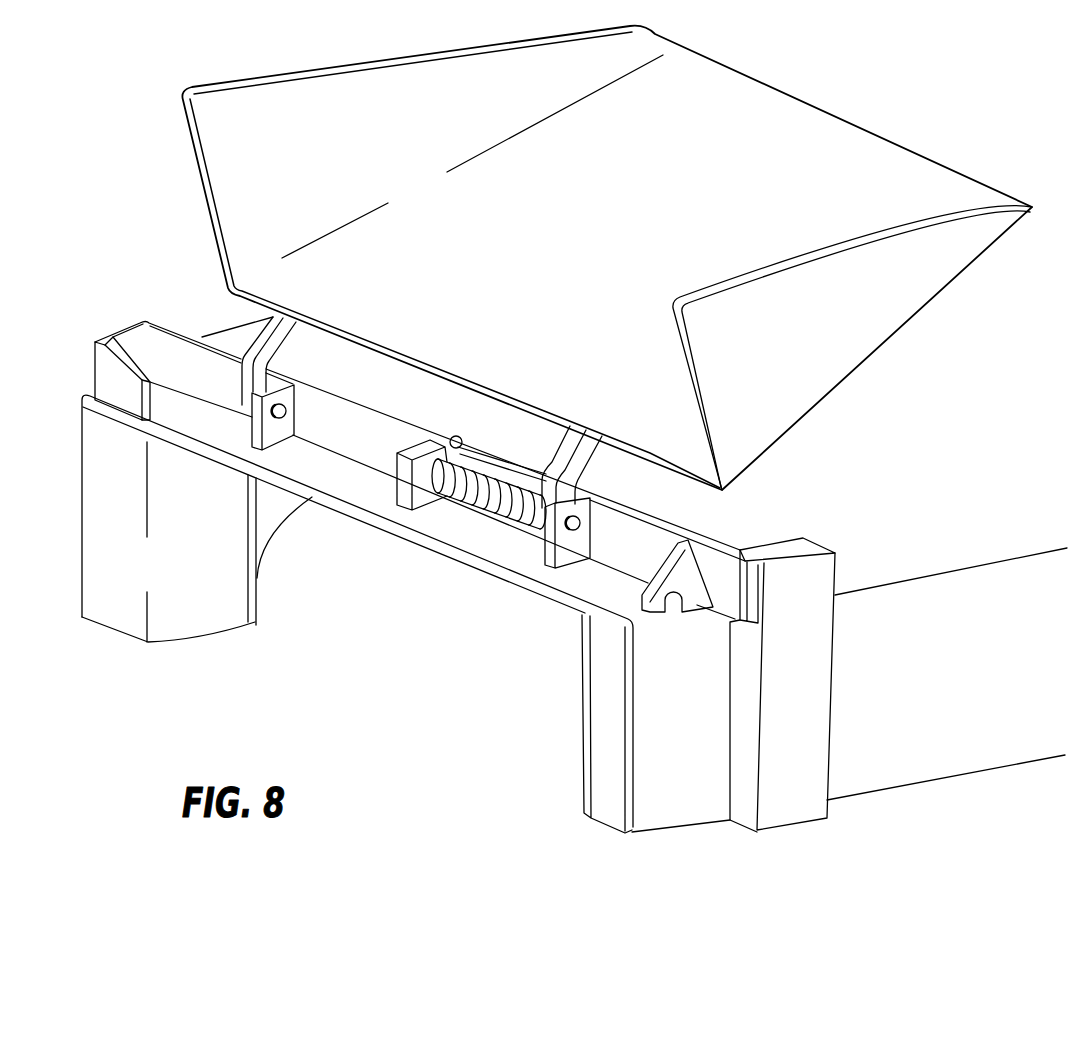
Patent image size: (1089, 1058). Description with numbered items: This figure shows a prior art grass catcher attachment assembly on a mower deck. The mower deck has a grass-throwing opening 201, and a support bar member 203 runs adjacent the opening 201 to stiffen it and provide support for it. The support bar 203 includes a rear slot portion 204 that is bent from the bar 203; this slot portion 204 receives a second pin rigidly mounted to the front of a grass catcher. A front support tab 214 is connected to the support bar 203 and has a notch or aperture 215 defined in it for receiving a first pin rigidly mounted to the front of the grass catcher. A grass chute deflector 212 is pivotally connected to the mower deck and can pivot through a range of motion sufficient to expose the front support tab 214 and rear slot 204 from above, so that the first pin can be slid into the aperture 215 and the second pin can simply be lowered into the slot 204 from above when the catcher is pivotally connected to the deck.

The grass-throwing opening 201 is at (380, 677).
The support bar member 203 is at (667, 545).
The rear slot portion 204 is at (133, 340).
The grass chute deflector 212 is at (835, 140).
The front support tab 214 is at (703, 605).
The notch or aperture 215 is at (668, 612).